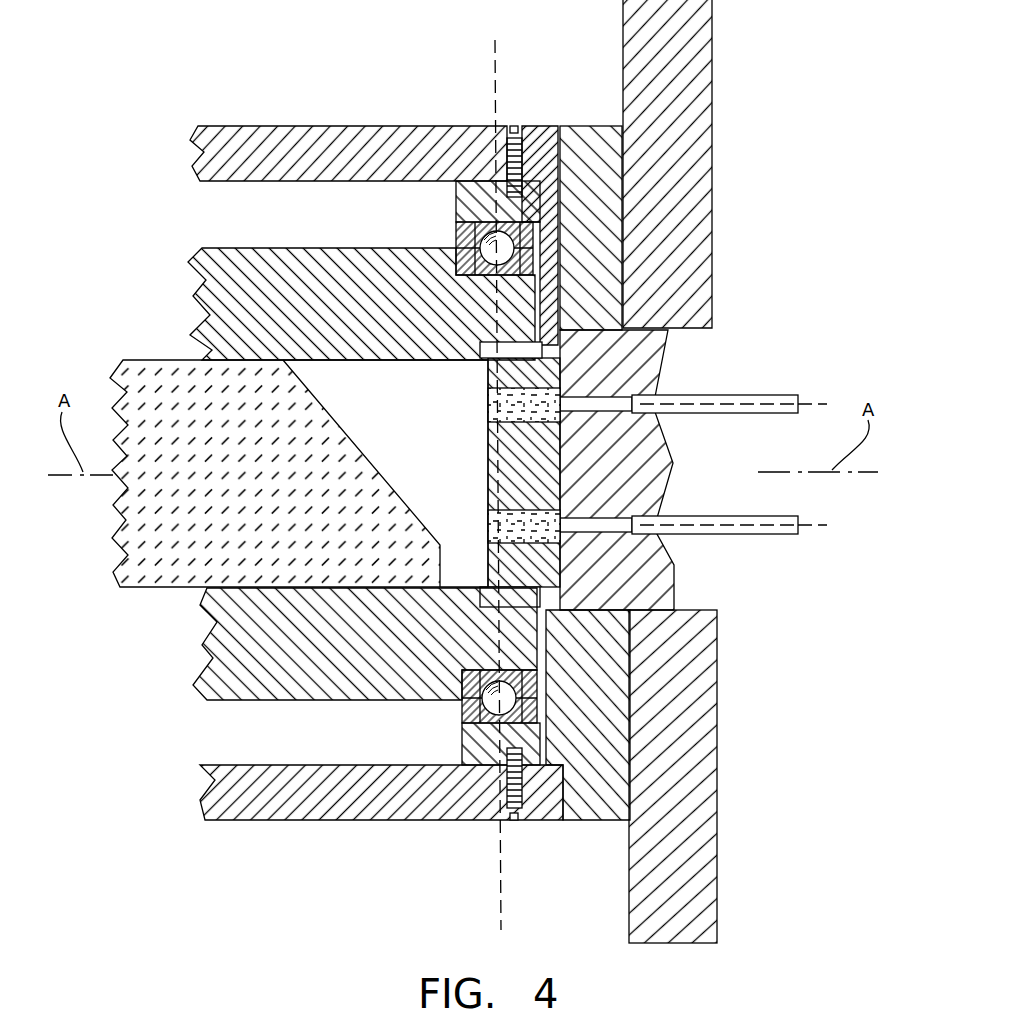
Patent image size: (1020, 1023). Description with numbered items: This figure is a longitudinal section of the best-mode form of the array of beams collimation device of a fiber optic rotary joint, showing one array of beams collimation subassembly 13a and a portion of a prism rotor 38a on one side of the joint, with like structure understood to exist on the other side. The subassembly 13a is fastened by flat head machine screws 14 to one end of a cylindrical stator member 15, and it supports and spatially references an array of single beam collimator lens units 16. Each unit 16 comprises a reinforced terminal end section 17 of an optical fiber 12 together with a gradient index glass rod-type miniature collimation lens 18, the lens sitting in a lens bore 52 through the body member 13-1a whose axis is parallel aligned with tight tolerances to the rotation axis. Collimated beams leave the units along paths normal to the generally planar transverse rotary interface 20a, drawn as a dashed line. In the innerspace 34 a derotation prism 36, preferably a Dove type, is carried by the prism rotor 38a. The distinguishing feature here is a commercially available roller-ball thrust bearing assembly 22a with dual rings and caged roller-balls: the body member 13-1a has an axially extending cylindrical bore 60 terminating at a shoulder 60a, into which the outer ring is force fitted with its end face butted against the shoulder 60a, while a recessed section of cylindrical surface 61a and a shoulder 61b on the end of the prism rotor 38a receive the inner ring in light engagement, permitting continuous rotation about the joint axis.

The optical fiber 12 is at (752, 398).
The array of beams collimation subassembly 13a is at (547, 385).
The body member 13-1a is at (623, 210).
The flat head machine screws 14 is at (508, 157).
The cylindrical stator member 15 is at (348, 133).
The single beam collimator lens unit 16 is at (532, 506).
The reinforced terminal end section 17 is at (628, 549).
The gradient index glass rod-type miniature collimation lens 18 is at (488, 533).
The transverse rotary interface 20a is at (498, 862).
The roller-ball thrust bearing assembly 22a is at (539, 675).
The innerspace 34 is at (278, 746).
The derotation prism 36 is at (162, 360).
The prism rotor 38a is at (290, 258).
The lens bore 52 is at (488, 402).
The cylindrical bore 60 is at (462, 718).
The shoulder 60a is at (530, 220).
The recessed section of cylindrical surface 61a is at (462, 690).
The shoulder 61b is at (468, 270).